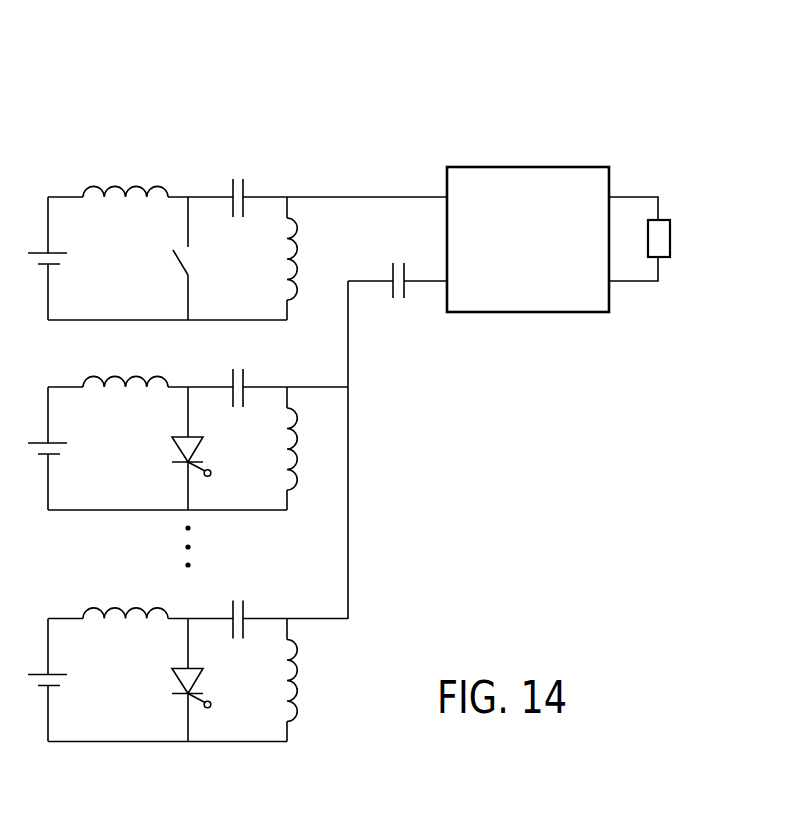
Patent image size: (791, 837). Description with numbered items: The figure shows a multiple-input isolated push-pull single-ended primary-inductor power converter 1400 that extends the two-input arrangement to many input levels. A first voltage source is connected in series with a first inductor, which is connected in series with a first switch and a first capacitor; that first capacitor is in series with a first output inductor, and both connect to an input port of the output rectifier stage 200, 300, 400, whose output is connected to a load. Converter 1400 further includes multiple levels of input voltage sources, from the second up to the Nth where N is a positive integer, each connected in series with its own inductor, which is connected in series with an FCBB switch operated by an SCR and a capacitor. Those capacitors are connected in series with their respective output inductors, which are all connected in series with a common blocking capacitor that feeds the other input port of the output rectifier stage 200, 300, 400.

The multiple-input isolated push-pull single-ended primary-inductor power converter 1400 is at (500, 105).
The output rectifier stage 200 is at (586, 212).
The output rectifier stage 300 is at (586, 212).
The output rectifier stage 400 is at (601, 141).